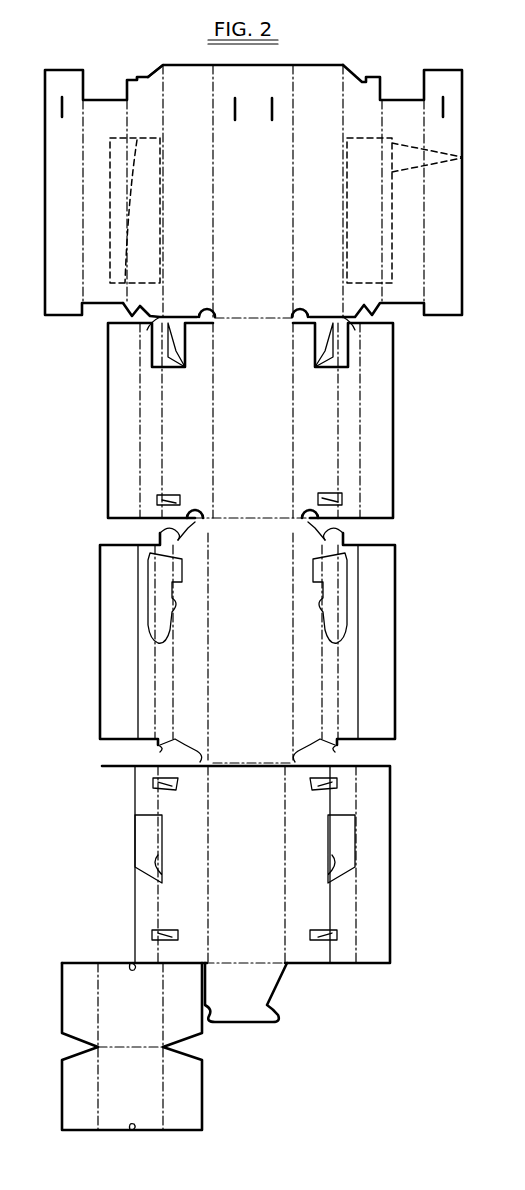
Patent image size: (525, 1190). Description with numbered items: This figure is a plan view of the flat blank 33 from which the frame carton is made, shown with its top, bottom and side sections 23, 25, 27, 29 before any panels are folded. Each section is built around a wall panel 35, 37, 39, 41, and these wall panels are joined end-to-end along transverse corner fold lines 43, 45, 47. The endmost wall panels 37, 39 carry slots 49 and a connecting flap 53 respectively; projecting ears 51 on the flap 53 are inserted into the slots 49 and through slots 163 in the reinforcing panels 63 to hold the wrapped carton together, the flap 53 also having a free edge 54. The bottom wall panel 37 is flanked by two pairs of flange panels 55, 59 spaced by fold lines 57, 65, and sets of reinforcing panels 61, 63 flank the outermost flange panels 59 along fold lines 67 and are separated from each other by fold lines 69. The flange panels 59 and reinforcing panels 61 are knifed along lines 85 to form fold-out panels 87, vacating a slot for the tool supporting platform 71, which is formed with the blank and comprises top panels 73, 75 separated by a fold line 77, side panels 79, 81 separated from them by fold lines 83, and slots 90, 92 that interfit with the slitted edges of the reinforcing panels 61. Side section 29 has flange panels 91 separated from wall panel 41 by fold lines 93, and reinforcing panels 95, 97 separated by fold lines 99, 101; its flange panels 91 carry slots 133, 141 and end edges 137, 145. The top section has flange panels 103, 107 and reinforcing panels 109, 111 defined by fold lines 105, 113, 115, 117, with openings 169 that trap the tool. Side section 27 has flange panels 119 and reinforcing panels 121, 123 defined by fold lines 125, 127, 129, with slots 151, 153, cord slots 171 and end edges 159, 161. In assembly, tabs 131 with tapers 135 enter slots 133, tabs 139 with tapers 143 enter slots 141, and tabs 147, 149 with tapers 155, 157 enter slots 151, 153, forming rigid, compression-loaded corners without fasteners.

The top section 23 is at (396, 649).
The bottom section 25 is at (466, 203).
The side section 27 is at (391, 869).
The side section 29 is at (393, 432).
The blank 33 is at (420, 529).
The wall panel 35 is at (233, 688).
The bottom wall panel 37 is at (233, 195).
The wall panel 39 is at (233, 898).
The wall panel 41 is at (234, 445).
The transverse fold line 43 is at (243, 316).
The transverse fold line 45 is at (255, 520).
The transverse fold line 47 is at (255, 764).
The slots 49 is at (238, 112).
The projecting ears 51 is at (208, 1018).
The connecting flap 53 is at (255, 985).
The tab edge 54 is at (240, 970).
The flange panels 55 is at (190, 108).
The fold lines 57 is at (297, 178).
The flange panels 59 is at (150, 100).
The reinforcing panels 61 is at (90, 115).
The reinforcing panels 63 is at (58, 85).
The fold lines 65 is at (160, 275).
The longitudinal fold lines 67 is at (120, 300).
The longitudinal fold lines 69 is at (82, 240).
The tool supporting platform 71 is at (180, 1134).
The top panel 73 is at (102, 966).
The top panel 75 is at (112, 1115).
The fold line 77 is at (110, 1050).
The side panels 79 is at (80, 1003).
The side panels 81 is at (180, 1010).
The fold lines 83 is at (185, 1082).
The knife lines 85 is at (110, 232).
The fold-out panels 87 is at (145, 222).
The slot 90 is at (134, 968).
The flange panels 91 is at (192, 402).
The slot 92 is at (130, 1132).
The longitudinal fold lines 93 is at (210, 432).
The reinforcing panels 95 is at (145, 398).
The reinforcing panels 97 is at (120, 455).
The longitudinal fold lines 99 is at (140, 470).
The longitudinal fold lines 101 is at (108, 516).
The flange panels 103 is at (195, 705).
The longitudinal fold lines 105 is at (152, 700).
The flange panels 107 is at (185, 662).
The reinforcing panels 109 is at (150, 644).
The reinforcing panels 111 is at (112, 656).
The longitudinal fold lines 113 is at (125, 680).
The longitudinal fold lines 115 is at (138, 695).
The longitudinal fold lines 117 is at (138, 565).
The flange panels 119 is at (193, 832).
The reinforcing panels 121 is at (135, 786).
The reinforcing panels 123 is at (118, 778).
The longitudinal fold lines 125 is at (210, 862).
The longitudinal fold lines 127 is at (135, 898).
The longitudinal fold lines 129 is at (130, 925).
The tabs 131 is at (140, 326).
The slots 133 is at (330, 365).
The tapers 135 is at (160, 312).
The end edges 137 is at (210, 322).
The tabs 139 is at (165, 528).
The slots 141 is at (183, 500).
The tapers 143 is at (249, 540).
The end edges 145 is at (198, 522).
The tabs 147 is at (162, 754).
The tabs 149 is at (133, 77).
The slots 151 is at (166, 790).
The slots 153 is at (168, 936).
The tapers 155 is at (285, 765).
The tapers 157 is at (150, 80).
The end edges 159 is at (205, 975).
The end edges 161 is at (210, 762).
The slots 163 is at (65, 117).
The openings 169 is at (175, 604).
The slots 171 is at (162, 866).